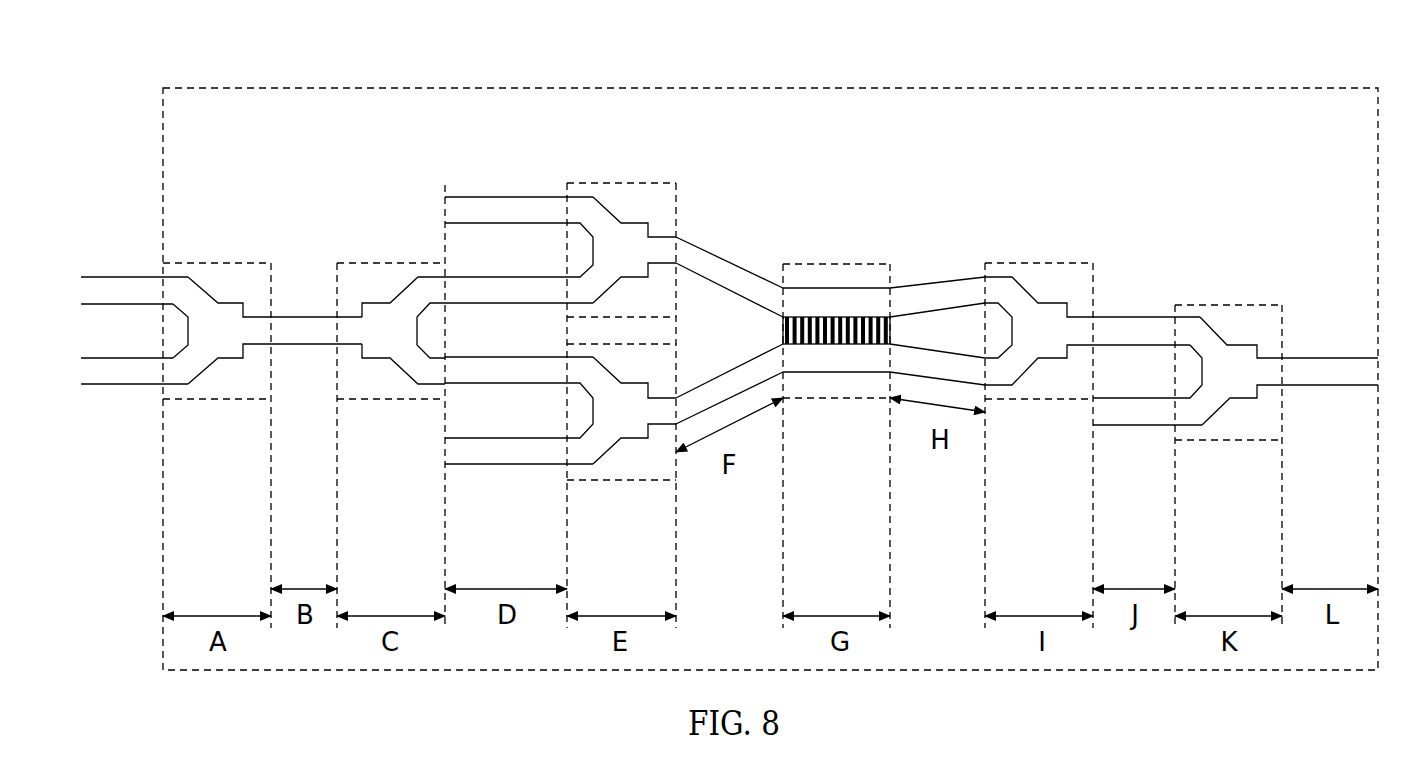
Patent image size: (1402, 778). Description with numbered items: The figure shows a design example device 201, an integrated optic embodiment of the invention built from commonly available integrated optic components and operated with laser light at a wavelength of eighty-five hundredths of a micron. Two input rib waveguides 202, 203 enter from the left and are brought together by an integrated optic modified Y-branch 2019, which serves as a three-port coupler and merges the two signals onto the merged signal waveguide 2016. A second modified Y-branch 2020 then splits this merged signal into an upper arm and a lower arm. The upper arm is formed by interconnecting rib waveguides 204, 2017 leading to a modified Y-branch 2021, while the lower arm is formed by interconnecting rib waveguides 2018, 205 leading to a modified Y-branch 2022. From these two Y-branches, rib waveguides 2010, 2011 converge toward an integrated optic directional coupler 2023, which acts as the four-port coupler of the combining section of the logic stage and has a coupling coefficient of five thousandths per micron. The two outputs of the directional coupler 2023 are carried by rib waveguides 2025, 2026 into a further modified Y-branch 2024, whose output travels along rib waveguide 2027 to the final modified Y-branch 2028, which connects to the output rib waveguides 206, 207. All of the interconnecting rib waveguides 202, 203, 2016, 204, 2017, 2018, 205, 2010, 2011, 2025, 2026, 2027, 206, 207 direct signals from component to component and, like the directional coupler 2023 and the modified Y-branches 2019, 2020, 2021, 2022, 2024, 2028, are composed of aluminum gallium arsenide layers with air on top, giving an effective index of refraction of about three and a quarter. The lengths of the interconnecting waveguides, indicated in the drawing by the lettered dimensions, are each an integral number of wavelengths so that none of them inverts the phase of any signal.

The design example device 201 is at (716, 88).
The interconnecting rib waveguide 202 is at (121, 277).
The interconnecting rib waveguide 203 is at (121, 387).
The interconnecting rib waveguide 204 is at (499, 197).
The interconnecting rib waveguide 205 is at (512, 464).
The interconnecting rib waveguide 206 is at (1134, 425).
The interconnecting rib waveguide 207 is at (1337, 358).
The interconnecting rib waveguide 2010 is at (729, 260).
The interconnecting rib waveguide 2011 is at (728, 370).
The merged signal waveguide 2016 is at (310, 317).
The interconnecting rib waveguide 2017 is at (538, 273).
The interconnecting rib waveguide 2018 is at (540, 385).
The modified Y-branch 2019 is at (217, 263).
The modified Y-branch 2020 is at (391, 263).
The modified Y-branch 2021 is at (621, 183).
The modified Y-branch 2022 is at (620, 480).
The integrated optic directional coupler 2023 is at (838, 264).
The modified Y-branch 2024 is at (1040, 263).
The interconnecting rib waveguide 2025 is at (917, 285).
The interconnecting rib waveguide 2026 is at (945, 350).
The interconnecting rib waveguide 2027 is at (1134, 317).
The modified Y-branch 2028 is at (1229, 305).